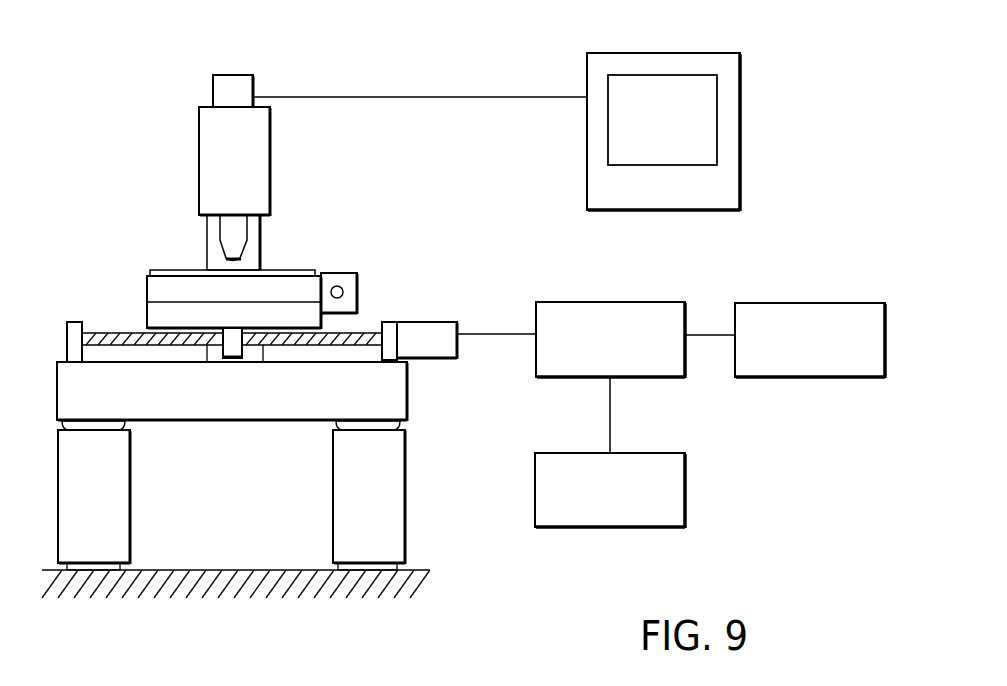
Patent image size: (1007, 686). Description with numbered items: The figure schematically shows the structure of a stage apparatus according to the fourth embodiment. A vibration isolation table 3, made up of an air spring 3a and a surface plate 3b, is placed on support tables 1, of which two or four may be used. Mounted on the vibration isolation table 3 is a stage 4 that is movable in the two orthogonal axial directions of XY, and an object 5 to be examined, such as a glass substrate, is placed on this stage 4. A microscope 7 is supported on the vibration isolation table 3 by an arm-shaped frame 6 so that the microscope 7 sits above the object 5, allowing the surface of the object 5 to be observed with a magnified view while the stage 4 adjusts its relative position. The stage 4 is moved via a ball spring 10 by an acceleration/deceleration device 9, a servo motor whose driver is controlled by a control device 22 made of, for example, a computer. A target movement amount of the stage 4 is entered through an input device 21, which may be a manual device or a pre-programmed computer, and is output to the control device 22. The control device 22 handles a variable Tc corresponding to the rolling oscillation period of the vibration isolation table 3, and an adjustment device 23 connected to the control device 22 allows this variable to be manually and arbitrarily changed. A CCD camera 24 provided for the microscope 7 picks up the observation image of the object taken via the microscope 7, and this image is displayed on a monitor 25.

The support table 1 is at (392, 530).
The vibration isolation table 3 is at (468, 375).
The air spring 3a is at (393, 423).
The surface plate 3b is at (400, 393).
The stage 4 is at (153, 285).
The object to be examined 5 is at (308, 270).
The arm-shaped frame 6 is at (213, 250).
The microscope 7 is at (255, 153).
The acceleration/deceleration device 9 is at (433, 322).
The ball spring 10 is at (104, 333).
The input device 21 is at (675, 453).
The control device 22 is at (605, 302).
The adjustment device 23 is at (810, 303).
The CCD camera 24 is at (236, 85).
The monitor 25 is at (667, 67).